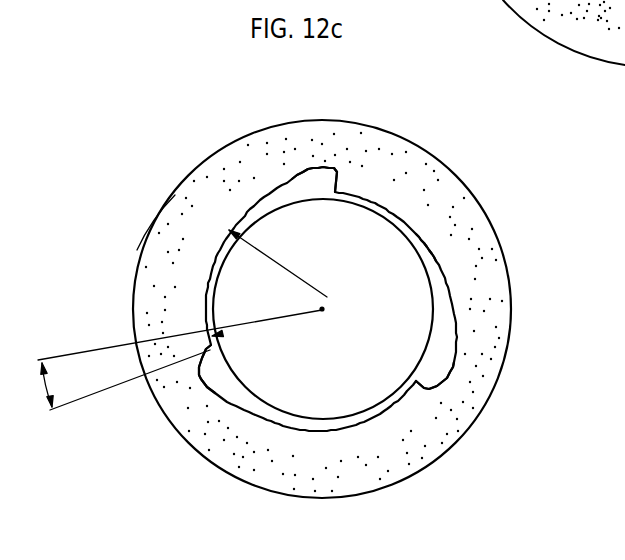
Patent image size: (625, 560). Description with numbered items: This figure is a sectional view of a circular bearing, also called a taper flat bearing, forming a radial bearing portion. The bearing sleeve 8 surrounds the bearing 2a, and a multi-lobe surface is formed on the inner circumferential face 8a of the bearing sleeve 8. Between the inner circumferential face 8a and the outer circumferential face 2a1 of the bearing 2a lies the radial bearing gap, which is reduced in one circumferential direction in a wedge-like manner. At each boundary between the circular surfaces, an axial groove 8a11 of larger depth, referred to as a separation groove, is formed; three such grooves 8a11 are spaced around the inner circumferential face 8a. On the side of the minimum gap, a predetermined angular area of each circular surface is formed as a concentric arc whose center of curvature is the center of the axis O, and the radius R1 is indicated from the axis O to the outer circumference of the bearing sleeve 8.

The bearing sleeve 8 is at (322, 289).
The inner circumferential face 8a is at (406, 228).
The axial groove 8a11 is at (331, 170).
The bearing 2a is at (385, 309).
The outer circumferential face 2a1 is at (437, 340).
The outer radius R1 (R2) R1 is at (111, 204).
The axis O is at (322, 317).